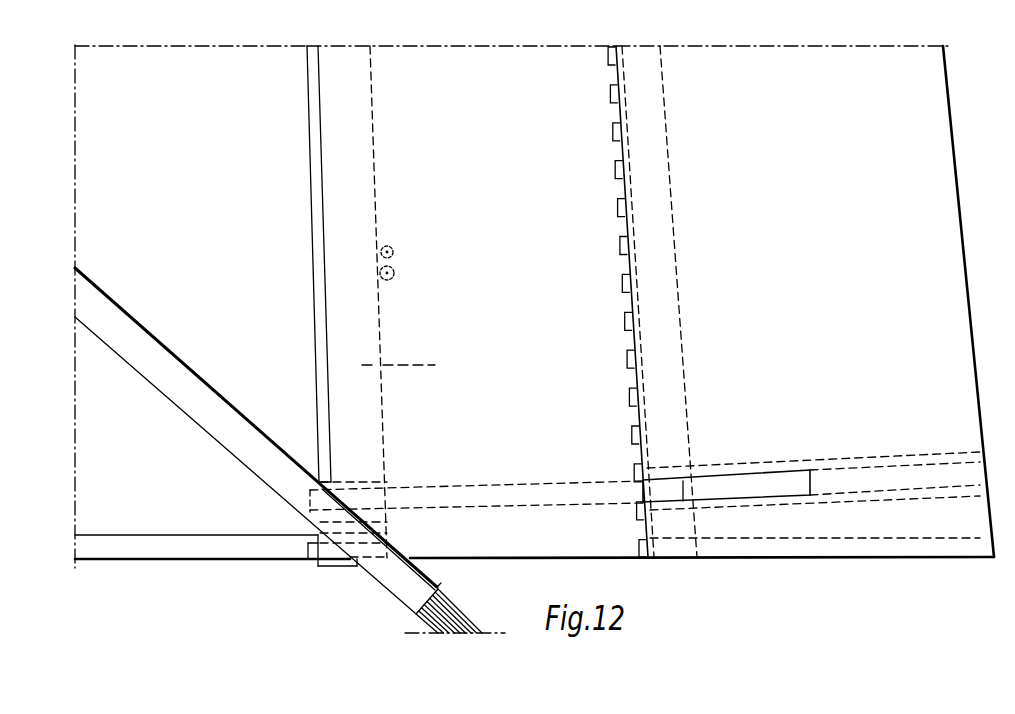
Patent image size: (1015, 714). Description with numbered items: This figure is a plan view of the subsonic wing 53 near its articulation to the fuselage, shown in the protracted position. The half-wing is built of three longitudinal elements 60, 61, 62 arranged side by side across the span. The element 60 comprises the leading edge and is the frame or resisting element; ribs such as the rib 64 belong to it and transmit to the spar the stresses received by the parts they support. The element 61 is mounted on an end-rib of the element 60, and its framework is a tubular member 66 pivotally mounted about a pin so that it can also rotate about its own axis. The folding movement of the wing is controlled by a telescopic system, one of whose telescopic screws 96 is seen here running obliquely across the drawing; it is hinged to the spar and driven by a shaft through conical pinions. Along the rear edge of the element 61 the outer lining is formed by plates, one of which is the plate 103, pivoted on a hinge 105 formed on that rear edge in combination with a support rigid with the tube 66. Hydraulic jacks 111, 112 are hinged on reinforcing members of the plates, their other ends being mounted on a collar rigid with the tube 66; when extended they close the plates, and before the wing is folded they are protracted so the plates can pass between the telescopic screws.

The subsonic wing 53 is at (706, 302).
The longitudinal element 60 is at (191, 33).
The longitudinal element 61 is at (461, 33).
The longitudinal element 62 is at (783, 33).
The rib 64 is at (205, 550).
The tubular member 66 is at (371, 302).
The telescopic screw 96 is at (142, 327).
The plate 103 is at (645, 301).
The hinge 105 is at (623, 364).
The hydraulic jack 111 is at (392, 280).
The hydraulic jack 112 is at (397, 240).